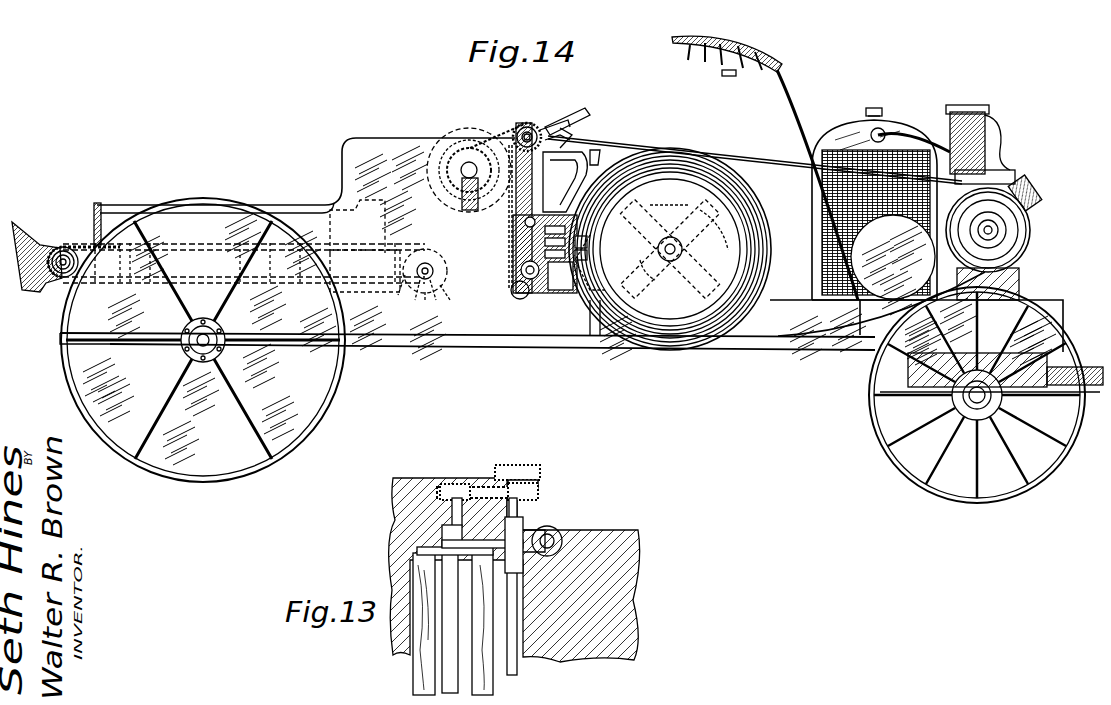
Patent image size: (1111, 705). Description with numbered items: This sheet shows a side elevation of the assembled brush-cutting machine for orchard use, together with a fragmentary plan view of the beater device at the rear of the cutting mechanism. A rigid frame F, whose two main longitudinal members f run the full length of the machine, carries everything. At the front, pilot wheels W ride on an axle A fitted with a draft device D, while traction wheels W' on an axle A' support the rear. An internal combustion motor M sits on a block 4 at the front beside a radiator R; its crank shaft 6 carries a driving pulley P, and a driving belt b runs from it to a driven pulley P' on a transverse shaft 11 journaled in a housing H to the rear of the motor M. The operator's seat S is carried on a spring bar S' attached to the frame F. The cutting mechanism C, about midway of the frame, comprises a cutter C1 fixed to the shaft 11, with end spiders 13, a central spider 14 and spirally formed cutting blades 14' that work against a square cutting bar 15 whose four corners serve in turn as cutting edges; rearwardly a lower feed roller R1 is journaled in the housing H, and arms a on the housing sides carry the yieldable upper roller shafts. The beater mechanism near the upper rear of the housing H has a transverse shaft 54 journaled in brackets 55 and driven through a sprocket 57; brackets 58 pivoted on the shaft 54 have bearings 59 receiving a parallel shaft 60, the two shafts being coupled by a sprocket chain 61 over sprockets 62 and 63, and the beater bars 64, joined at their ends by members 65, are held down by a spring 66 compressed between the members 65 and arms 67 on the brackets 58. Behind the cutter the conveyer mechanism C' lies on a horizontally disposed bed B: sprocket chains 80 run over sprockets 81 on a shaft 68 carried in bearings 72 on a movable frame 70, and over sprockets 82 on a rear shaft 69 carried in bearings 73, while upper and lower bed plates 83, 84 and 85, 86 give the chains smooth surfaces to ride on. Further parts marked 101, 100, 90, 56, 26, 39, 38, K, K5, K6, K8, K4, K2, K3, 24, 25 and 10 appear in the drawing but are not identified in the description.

In FIG. 14, the traction wheels W' is at (203, 327).
In FIG. 14, the axle A' is at (183, 338).
In FIG. 14, the frame bar 101 is at (345, 170).
In FIG. 14, the frame bar 100 is at (298, 210).
In FIG. 14, the bed B is at (205, 250).
In FIG. 14, the sprocket chains 80 is at (68, 245).
In FIG. 14, the transverse shaft 69 is at (70, 275).
In FIG. 14, the bearings 73 is at (72, 270).
In FIG. 14, the sprockets 82 is at (40, 280).
In FIG. 14, the bracket 90 is at (368, 208).
In FIG. 14, the upper plate 85 is at (136, 250).
In FIG. 14, the lower plate 86 is at (160, 275).
In FIG. 14, the upper bed plate 83 is at (300, 272).
In FIG. 14, the lower bed plate 84 is at (326, 282).
In FIG. 14, the conveyer mechanism C' is at (229, 251).
In FIG. 14, the movable frame 70 is at (400, 270).
In FIG. 14, the bearings 72 is at (410, 290).
In FIG. 14, the transverse shaft 68 is at (425, 300).
In FIG. 14, the sprockets 81 is at (445, 290).
In FIG. 14, the beater bars 64 is at (452, 203).
In FIG. 13, the beater bars 64 is at (413, 576).
In FIG. 14, the connecting members 65 is at (470, 148).
In FIG. 13, the connecting members 65 is at (417, 550).
In FIG. 14, the bearings 59 is at (470, 160).
In FIG. 13, the bearings 59 is at (442, 532).
In FIG. 14, the sprocket chain 61 is at (510, 128).
In FIG. 13, the sprocket chain 61 is at (482, 487).
In FIG. 14, the sprocket 62 is at (520, 126).
In FIG. 13, the sprocket 62 is at (540, 492).
In FIG. 14, the brackets 58 is at (522, 128).
In FIG. 13, the brackets 58 is at (520, 560).
In FIG. 14, the transverse shaft 54 is at (529, 135).
In FIG. 13, the transverse shaft 54 is at (518, 508).
In FIG. 14, the housing H is at (580, 160).
In FIG. 13, the housing H is at (568, 593).
In FIG. 14, the chain 56 is at (508, 215).
In FIG. 13, the chain 56 is at (535, 480).
In FIG. 14, the lower sprocket 26 is at (518, 296).
In FIG. 14, the arms a is at (565, 182).
In FIG. 14, the lug 39 is at (590, 156).
In FIG. 14, the link 38 is at (572, 140).
In FIG. 14, the brackets 55 is at (572, 135).
In FIG. 13, the brackets 55 is at (523, 528).
In FIG. 14, the spring 66 is at (566, 123).
In FIG. 13, the spring 66 is at (552, 538).
In FIG. 14, the arms 67 is at (576, 112).
In FIG. 13, the arms 67 is at (563, 542).
In FIG. 14, the gear casing K is at (577, 232).
In FIG. 14, the gear K5 is at (540, 222).
In FIG. 14, the gear K6 is at (545, 230).
In FIG. 14, the gear K8 is at (545, 242).
In FIG. 14, the gear K4 is at (545, 254).
In FIG. 14, the gear K2 is at (520, 272).
In FIG. 14, the gear K3 is at (560, 292).
In FIG. 14, the clutch member 24 is at (588, 243).
In FIG. 14, the clutch member 25 is at (588, 256).
In FIG. 14, the lower feed roller R1 is at (603, 290).
In FIG. 14, the cutting mechanism C is at (467, 333).
In FIG. 14, the driving belt b is at (610, 335).
In FIG. 14, the longitudinal frame members f is at (881, 304).
In FIG. 14, the frame F is at (802, 358).
In FIG. 14, the draft device D is at (1060, 342).
In FIG. 14, the driven pulley P' is at (670, 262).
In FIG. 14, the cutter C1 is at (670, 249).
In FIG. 14, the transverse shaft 11 is at (683, 250).
In FIG. 14, the central spider 14 is at (670, 249).
In FIG. 14, the cutting blades 14' is at (670, 194).
In FIG. 14, the end spiders 13 is at (714, 227).
In FIG. 14, the cutting bar 15 is at (645, 270).
In FIG. 14, the operator's seat S is at (727, 44).
In FIG. 14, the spring bar S' is at (807, 185).
In FIG. 14, the radiator R is at (842, 132).
In FIG. 14, the water pipe 10 is at (908, 138).
In FIG. 14, the block 4 is at (1020, 283).
In FIG. 14, the internal combustion motor M is at (1028, 190).
In FIG. 14, the driving pulley P is at (998, 230).
In FIG. 14, the crank shaft 6 is at (992, 230).
In FIG. 14, the pilot wheels W is at (977, 395).
In FIG. 14, the axle A is at (996, 397).
In FIG. 13, the sprocket 63 is at (446, 484).
In FIG. 13, the sprocket 57 is at (520, 465).
In FIG. 13, the shaft 60 is at (452, 509).